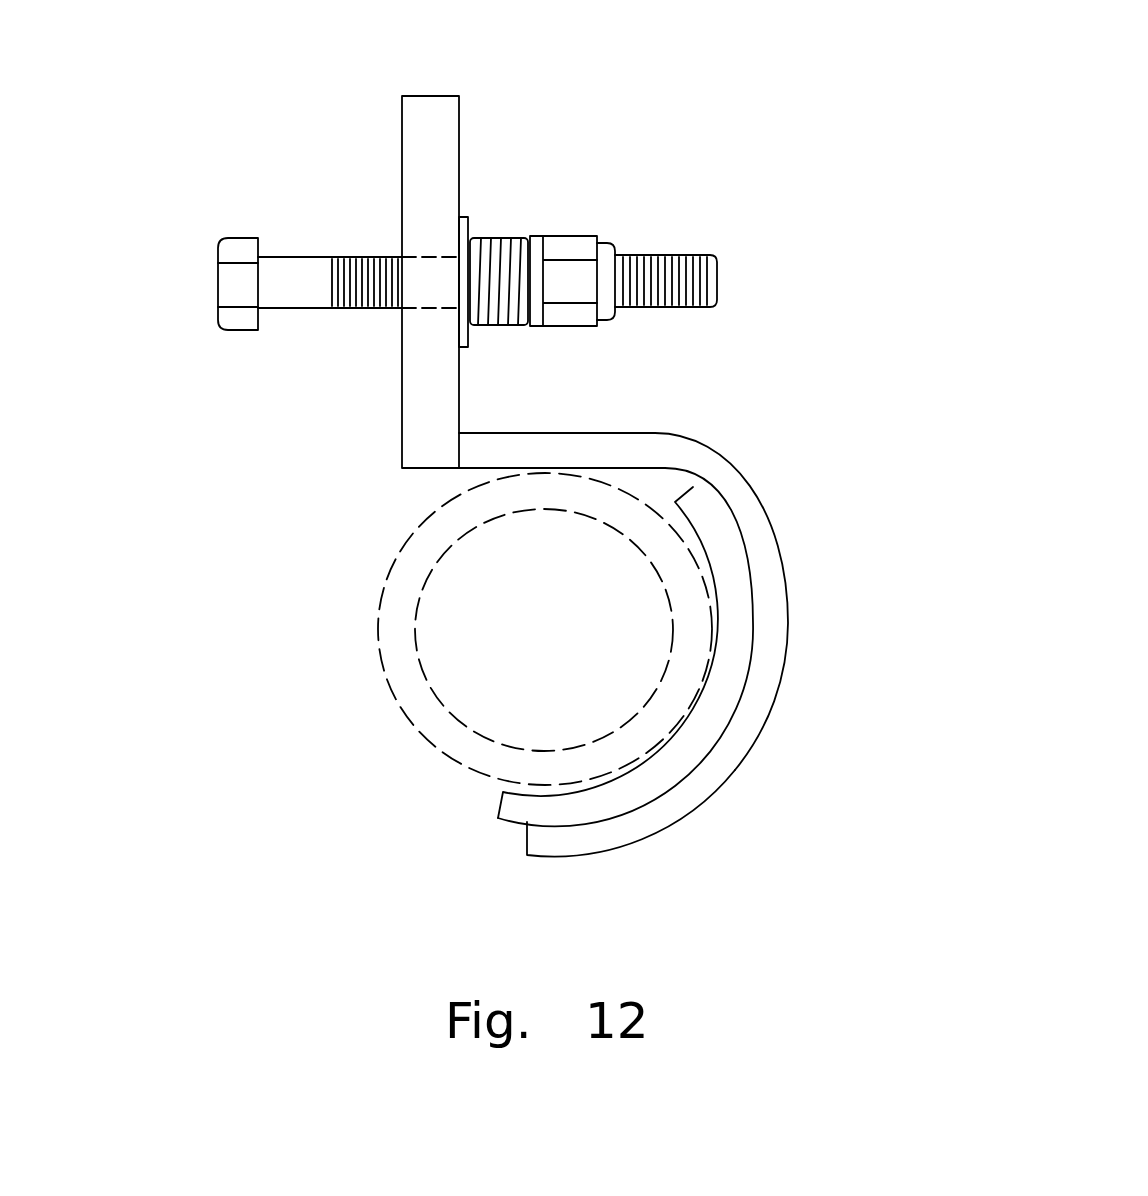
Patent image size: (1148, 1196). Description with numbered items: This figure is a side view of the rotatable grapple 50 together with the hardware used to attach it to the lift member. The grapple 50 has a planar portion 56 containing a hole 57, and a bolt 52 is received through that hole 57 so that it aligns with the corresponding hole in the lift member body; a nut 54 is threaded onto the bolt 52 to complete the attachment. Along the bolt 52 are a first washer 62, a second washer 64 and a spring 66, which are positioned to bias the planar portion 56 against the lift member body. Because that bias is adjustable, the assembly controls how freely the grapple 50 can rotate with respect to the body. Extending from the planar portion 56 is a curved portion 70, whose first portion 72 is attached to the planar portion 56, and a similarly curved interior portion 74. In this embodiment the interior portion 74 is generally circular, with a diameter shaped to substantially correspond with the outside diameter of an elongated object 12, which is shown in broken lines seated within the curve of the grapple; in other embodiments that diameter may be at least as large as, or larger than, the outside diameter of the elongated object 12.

The rotatable grapple 50 is at (335, 169).
The bolt 52 is at (217, 273).
The nut 54 is at (567, 327).
The planar portion 56 is at (402, 417).
The hole 57 is at (433, 307).
The first washer 62 is at (462, 218).
The second washer 64 is at (538, 235).
The spring 66 is at (497, 238).
The curved portion 70 is at (808, 617).
The first portion 72 is at (690, 808).
The curved interior portion 74 is at (405, 776).
The elongated object 12 is at (388, 688).